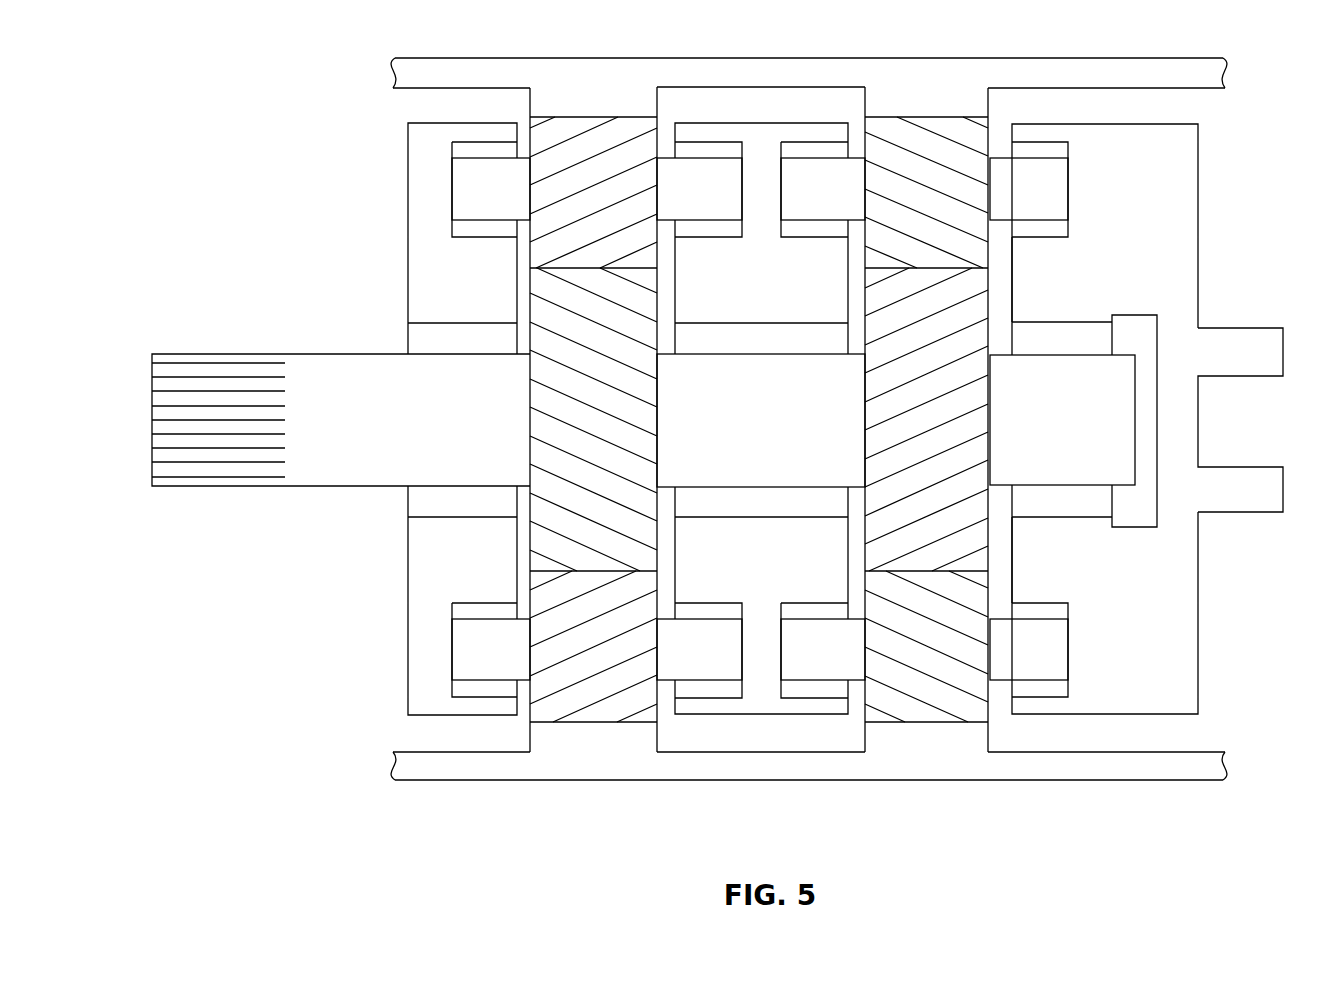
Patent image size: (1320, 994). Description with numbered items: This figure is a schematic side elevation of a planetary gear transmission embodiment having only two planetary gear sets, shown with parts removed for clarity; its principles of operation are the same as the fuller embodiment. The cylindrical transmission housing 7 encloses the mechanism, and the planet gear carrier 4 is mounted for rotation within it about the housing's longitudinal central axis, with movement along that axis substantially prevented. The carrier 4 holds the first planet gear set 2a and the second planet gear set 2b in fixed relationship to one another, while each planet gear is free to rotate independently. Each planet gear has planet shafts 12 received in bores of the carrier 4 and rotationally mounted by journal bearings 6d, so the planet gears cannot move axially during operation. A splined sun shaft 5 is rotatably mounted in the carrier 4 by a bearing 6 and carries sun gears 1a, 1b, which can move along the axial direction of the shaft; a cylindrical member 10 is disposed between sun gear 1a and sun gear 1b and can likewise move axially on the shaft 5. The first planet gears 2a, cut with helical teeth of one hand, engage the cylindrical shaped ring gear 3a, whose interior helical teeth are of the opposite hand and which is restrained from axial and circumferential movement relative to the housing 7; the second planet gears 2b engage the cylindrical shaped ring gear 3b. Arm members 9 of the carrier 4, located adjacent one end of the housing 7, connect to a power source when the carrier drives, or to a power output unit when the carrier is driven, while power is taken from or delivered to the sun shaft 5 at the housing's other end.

The sun gear 1a is at (905, 433).
The sun gear 1b is at (583, 433).
The planet gear set 2a is at (905, 200).
The planet gear set 2b is at (585, 200).
The cylindrical shaped ring gear 3a is at (905, 103).
The cylindrical shaped ring gear 3b is at (585, 103).
The planet gear carrier 4 is at (448, 290).
The sun shaft 5 is at (393, 433).
The bearing 6 is at (1044, 353).
The journal bearing 6d is at (1043, 229).
The cylindrical transmission housing 7 is at (762, 68).
The arm members 9 is at (1267, 512).
The cylindrical member 10 is at (740, 433).
The planet shafts 12 is at (1056, 182).